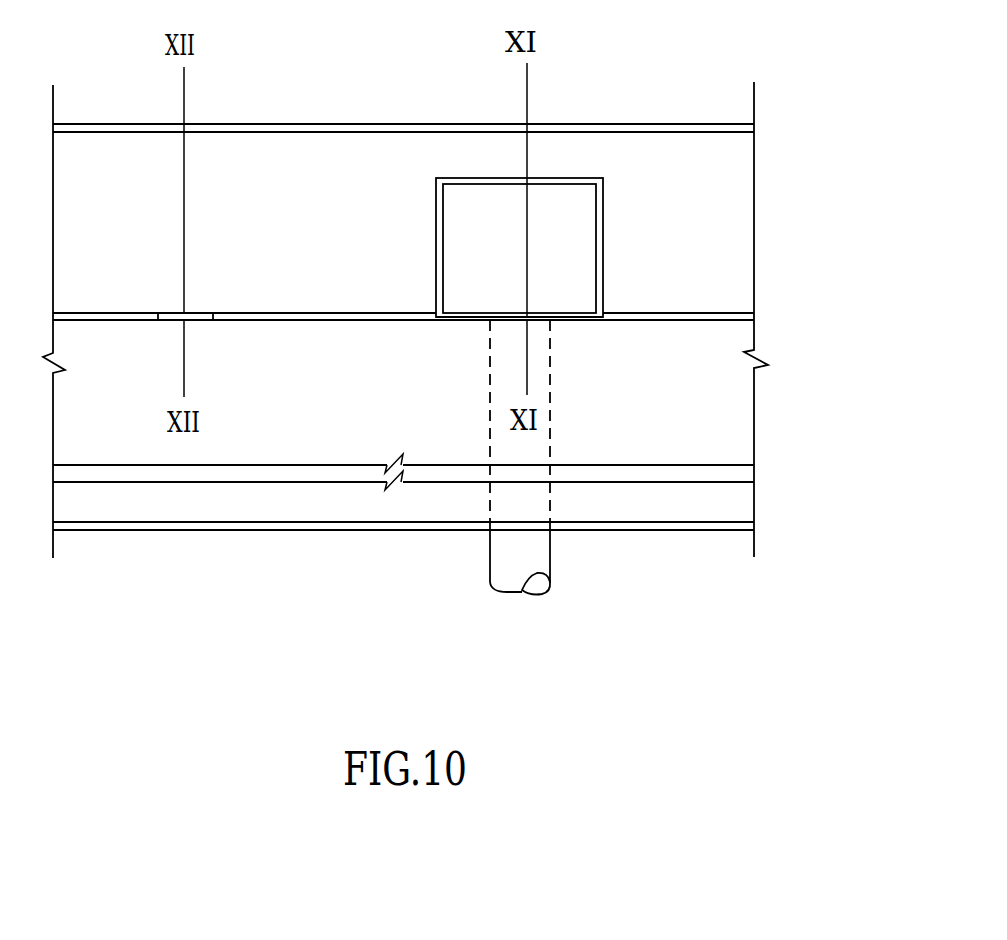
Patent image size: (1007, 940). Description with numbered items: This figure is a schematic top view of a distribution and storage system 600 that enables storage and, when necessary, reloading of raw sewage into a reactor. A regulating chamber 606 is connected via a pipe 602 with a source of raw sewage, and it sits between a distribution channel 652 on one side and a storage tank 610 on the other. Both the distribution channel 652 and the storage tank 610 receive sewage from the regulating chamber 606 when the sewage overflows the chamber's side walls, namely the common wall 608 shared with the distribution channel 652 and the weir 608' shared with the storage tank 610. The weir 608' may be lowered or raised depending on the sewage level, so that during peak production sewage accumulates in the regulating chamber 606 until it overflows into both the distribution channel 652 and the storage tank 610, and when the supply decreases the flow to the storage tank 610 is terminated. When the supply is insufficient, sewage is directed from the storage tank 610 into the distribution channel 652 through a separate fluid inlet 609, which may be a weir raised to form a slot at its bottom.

The distribution and storage system 600 is at (824, 137).
The pipe 602 is at (528, 549).
The regulating chamber 606 is at (510, 255).
The common wall 608 is at (476, 188).
The weir 608' is at (640, 371).
The fluid inlet 609 is at (175, 313).
The storage tank 610 is at (393, 400).
The distribution channel 652 is at (323, 231).